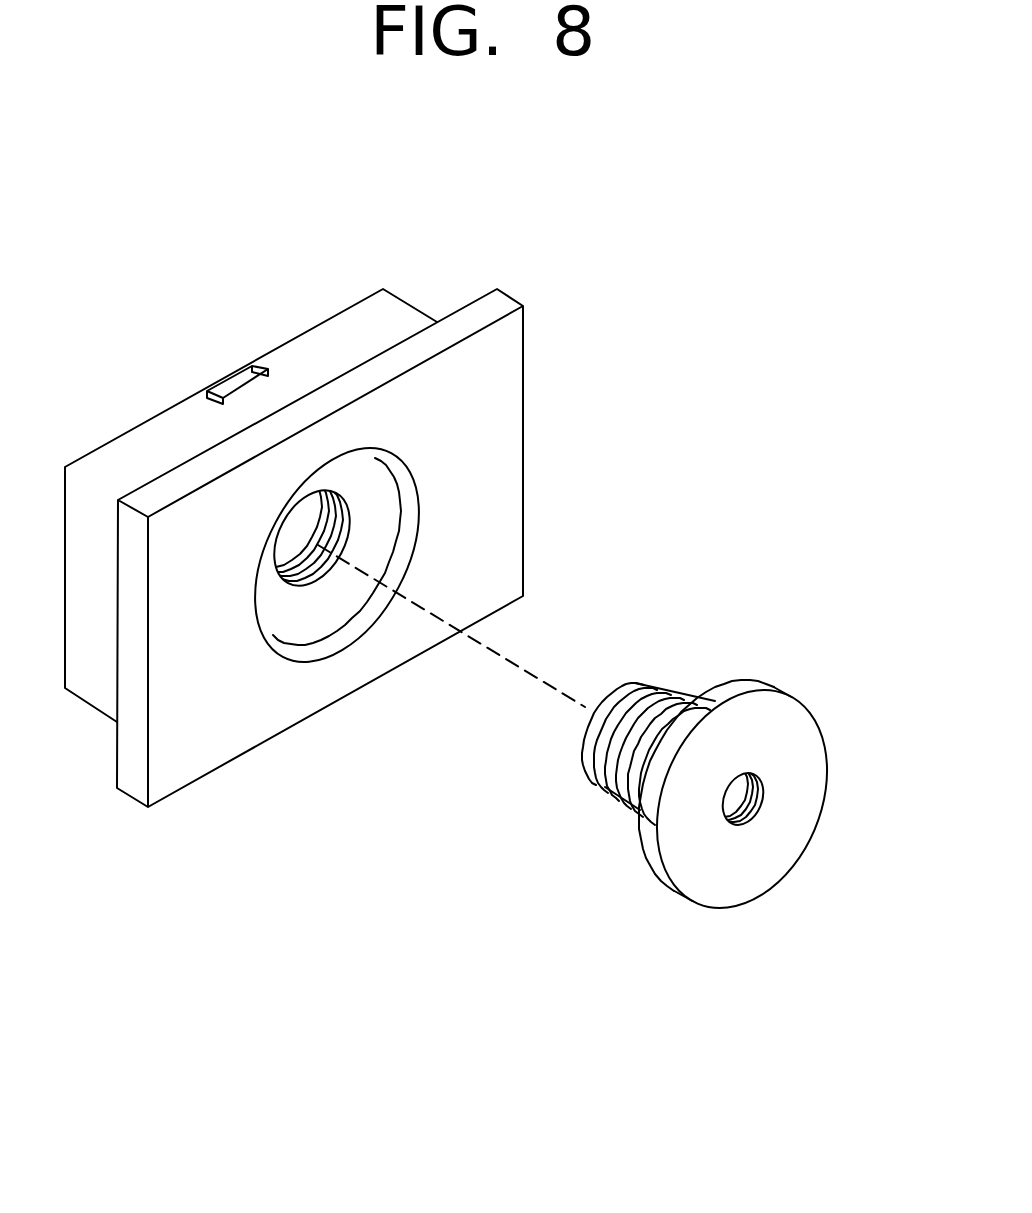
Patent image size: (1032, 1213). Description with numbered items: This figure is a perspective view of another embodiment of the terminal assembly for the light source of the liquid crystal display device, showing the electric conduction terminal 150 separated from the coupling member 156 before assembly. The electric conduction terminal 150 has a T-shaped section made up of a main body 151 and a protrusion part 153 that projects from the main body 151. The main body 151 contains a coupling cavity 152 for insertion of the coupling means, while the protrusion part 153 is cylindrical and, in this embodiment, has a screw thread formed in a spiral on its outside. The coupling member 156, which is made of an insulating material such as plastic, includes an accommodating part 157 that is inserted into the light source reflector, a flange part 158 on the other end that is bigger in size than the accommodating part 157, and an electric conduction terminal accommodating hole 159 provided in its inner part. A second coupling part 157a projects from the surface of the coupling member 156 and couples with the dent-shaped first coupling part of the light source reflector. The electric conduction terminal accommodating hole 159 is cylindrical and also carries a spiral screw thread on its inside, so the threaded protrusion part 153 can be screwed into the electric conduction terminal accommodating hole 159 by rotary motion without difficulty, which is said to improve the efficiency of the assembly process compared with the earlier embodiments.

The electric conduction terminal 150 is at (736, 767).
The main body 151 is at (757, 824).
The coupling cavity 152 is at (741, 826).
The protrusion part 153 is at (657, 688).
The coupling member 156 is at (362, 461).
The accommodating part 157 is at (321, 473).
The second coupling part 157a is at (237, 377).
The flange part 158 is at (388, 543).
The electric conduction terminal accommodating hole 159 is at (307, 557).